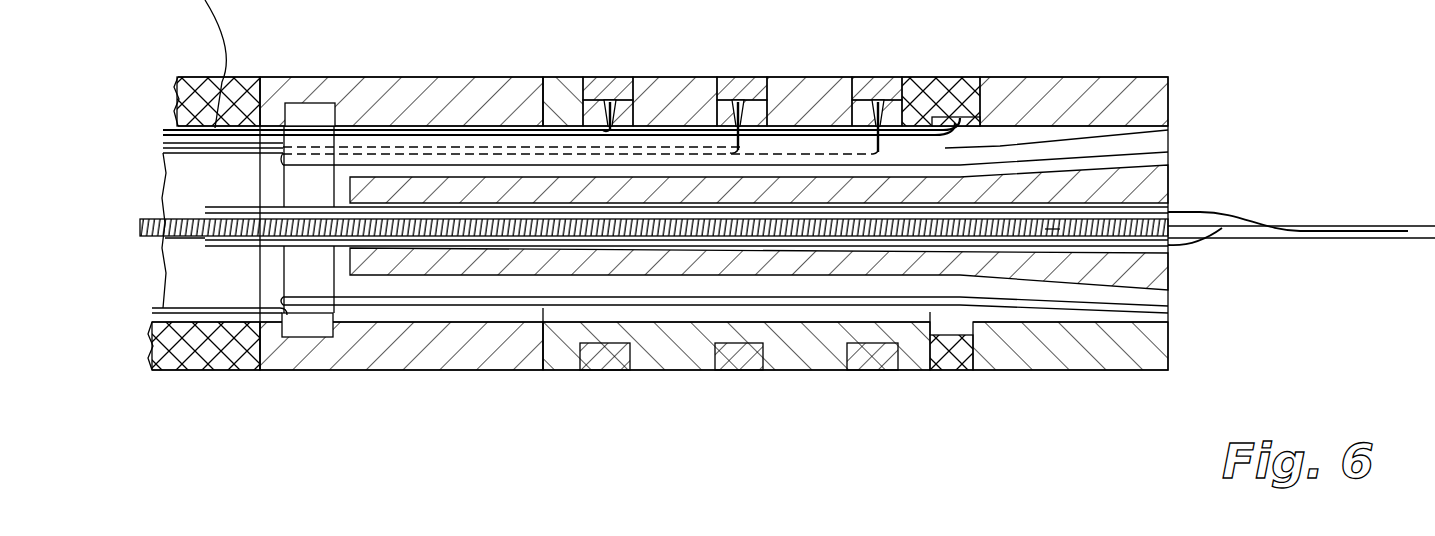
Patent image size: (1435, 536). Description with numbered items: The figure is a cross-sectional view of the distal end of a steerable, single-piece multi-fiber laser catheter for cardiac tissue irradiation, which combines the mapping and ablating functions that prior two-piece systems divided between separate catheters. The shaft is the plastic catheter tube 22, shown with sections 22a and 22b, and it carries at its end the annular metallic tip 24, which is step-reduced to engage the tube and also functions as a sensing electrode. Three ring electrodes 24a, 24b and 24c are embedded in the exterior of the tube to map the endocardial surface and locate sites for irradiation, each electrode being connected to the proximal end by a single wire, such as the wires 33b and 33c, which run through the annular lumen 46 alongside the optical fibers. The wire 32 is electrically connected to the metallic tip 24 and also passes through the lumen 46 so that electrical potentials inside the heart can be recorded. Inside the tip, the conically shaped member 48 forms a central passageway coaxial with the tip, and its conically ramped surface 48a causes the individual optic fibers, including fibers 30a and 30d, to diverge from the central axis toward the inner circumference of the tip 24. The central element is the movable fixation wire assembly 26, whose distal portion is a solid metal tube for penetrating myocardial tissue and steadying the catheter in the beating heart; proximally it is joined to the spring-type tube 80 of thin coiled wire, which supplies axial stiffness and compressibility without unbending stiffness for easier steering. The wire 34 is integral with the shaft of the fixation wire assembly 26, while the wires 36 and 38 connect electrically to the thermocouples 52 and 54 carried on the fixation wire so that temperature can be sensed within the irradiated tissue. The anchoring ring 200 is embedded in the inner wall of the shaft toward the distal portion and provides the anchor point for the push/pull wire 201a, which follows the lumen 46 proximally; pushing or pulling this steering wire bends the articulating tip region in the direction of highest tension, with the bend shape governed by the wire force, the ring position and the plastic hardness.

The plastic catheter tube 22 is at (690, 78).
The housing section 22a is at (455, 76).
The housing end seal 22b is at (200, 130).
The annular metallic tip 24 is at (1085, 90).
The ring electrode 24a is at (880, 94).
The ring electrode 24b is at (748, 88).
The ring electrode 24c is at (608, 88).
The fixation wire assembly 26 is at (1348, 192).
The optic fiber 30a is at (1150, 141).
The optic fiber 30d is at (1150, 311).
The wire 32 is at (197, 115).
The electrode wire 33b is at (237, 143).
The electrode wire 33c is at (258, 134).
The wire 34 is at (165, 198).
The wire 36 is at (232, 200).
The wire 38 is at (197, 250).
The annular lumen 46 is at (578, 128).
The conically shaped member 48 is at (1153, 184).
The conically ramped surface 48a is at (1160, 298).
The thermocouple 52 is at (1410, 244).
The thermocouple 54 is at (1223, 238).
The spring-type tube 80 is at (1050, 230).
The anchoring ring 200 is at (323, 110).
The push/pull wire 201a is at (205, 323).